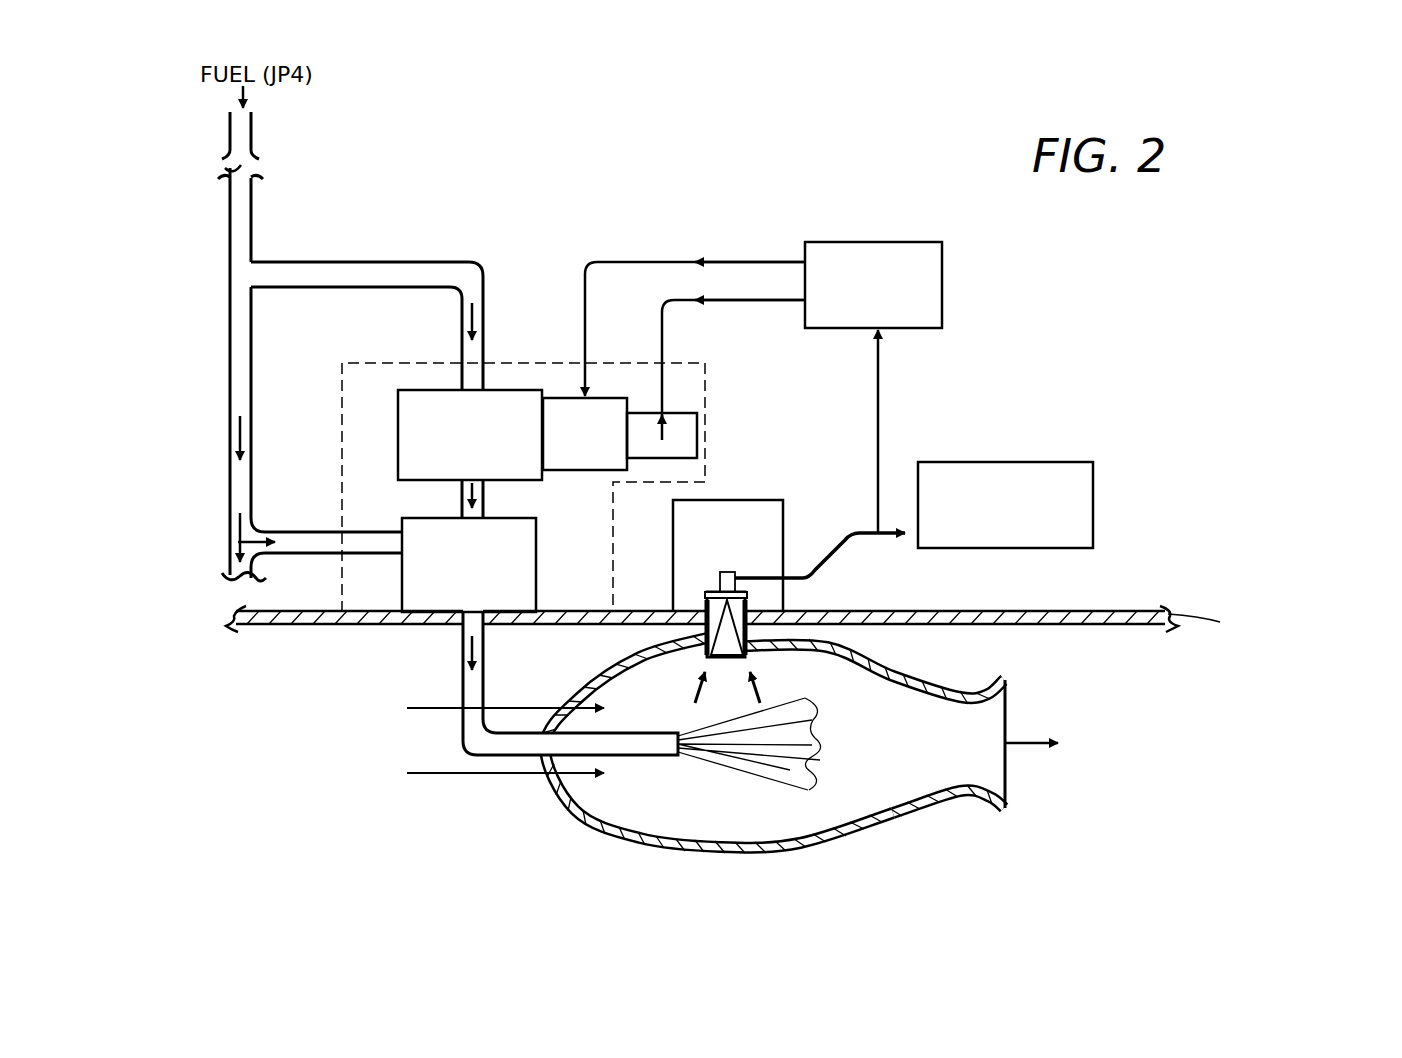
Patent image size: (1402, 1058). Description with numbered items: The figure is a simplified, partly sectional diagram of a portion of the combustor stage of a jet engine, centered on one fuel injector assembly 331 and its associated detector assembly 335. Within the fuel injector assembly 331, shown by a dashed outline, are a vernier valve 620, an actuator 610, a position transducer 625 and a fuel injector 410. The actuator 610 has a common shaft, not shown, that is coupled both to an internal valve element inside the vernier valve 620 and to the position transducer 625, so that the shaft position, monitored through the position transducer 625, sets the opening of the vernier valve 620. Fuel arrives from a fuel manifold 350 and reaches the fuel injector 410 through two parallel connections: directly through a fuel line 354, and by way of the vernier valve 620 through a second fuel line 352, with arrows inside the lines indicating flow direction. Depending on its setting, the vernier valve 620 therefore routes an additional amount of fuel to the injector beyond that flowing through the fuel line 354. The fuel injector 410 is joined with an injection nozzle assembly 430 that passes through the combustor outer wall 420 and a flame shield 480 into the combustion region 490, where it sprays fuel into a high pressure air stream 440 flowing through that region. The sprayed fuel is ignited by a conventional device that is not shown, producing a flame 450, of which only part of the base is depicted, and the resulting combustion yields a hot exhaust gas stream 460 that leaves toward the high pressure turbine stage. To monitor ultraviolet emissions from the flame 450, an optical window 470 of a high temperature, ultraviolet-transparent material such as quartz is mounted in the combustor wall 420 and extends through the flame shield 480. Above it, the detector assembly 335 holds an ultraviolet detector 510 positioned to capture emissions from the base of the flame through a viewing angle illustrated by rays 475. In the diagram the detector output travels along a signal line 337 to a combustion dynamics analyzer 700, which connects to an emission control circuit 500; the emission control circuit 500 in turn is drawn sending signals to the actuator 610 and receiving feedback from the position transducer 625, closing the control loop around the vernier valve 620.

The fuel manifold 350 is at (253, 198).
The fuel line 352 is at (403, 272).
The fuel line 354 is at (313, 547).
The fuel injector assembly 331 is at (377, 362).
The vernier valve 620 is at (500, 390).
The actuator 610 is at (612, 449).
The position transducer 625 is at (690, 448).
The emission control circuit 500 is at (859, 242).
The combustion dynamics analyzer 700 is at (1040, 462).
The ultraviolet detector 510 is at (728, 572).
The detector assembly 335 is at (783, 517).
The detector signal line 337 is at (748, 582).
The fuel injector 410 is at (400, 522).
The combustor outer wall 420 is at (1047, 608).
The optical window 470 is at (706, 624).
The rays 475 is at (752, 694).
The high pressure air stream 440 is at (432, 772).
The injection nozzle assembly 430 is at (518, 745).
The combustion region 490 is at (866, 750).
The flame shield 480 is at (918, 795).
The flame 450 is at (780, 773).
The hot exhaust gas stream 460 is at (1025, 740).